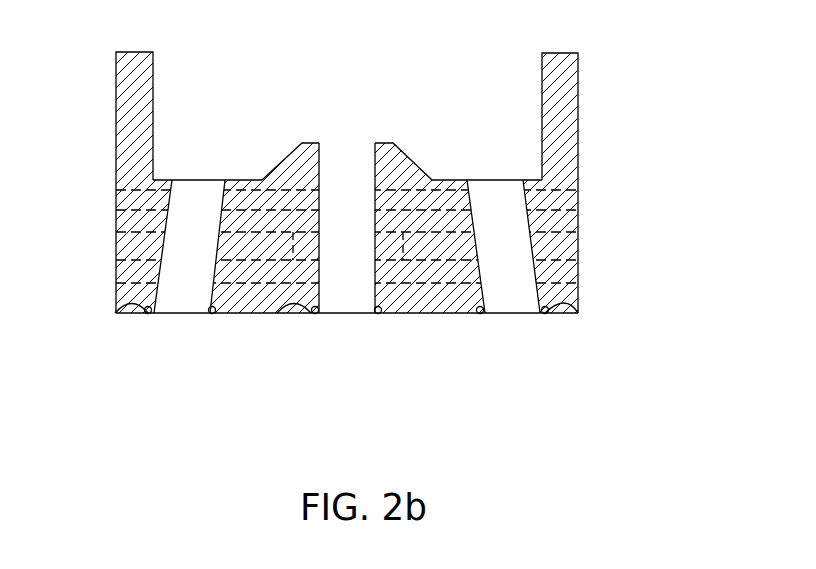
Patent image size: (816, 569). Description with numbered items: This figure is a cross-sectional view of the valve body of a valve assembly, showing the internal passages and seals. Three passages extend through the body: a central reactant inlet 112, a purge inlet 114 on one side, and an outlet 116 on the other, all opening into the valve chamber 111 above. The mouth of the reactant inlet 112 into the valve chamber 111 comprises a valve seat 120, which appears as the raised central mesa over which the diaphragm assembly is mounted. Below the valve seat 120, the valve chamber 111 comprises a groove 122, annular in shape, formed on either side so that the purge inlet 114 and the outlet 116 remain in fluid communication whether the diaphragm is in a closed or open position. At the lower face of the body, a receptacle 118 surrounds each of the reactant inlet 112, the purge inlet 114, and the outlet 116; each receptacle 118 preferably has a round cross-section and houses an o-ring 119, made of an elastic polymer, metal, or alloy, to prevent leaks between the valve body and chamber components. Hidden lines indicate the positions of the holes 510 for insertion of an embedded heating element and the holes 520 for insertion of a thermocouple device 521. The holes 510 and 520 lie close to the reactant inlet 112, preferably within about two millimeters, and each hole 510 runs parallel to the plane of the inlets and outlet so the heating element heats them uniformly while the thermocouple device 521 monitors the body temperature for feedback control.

The valve chamber 111 is at (400, 98).
The reactant inlet 112 is at (352, 297).
The purge inlet 114 is at (512, 303).
The outlet 116 is at (185, 295).
The receptacle 118 is at (598, 345).
The o-ring 119 is at (560, 387).
The valve seat 120 is at (312, 143).
The groove 122 is at (212, 143).
The holes for embedded heating element 510 is at (558, 202).
The holes for thermocouple device 520 is at (572, 247).
The thermocouple device 521 is at (387, 265).